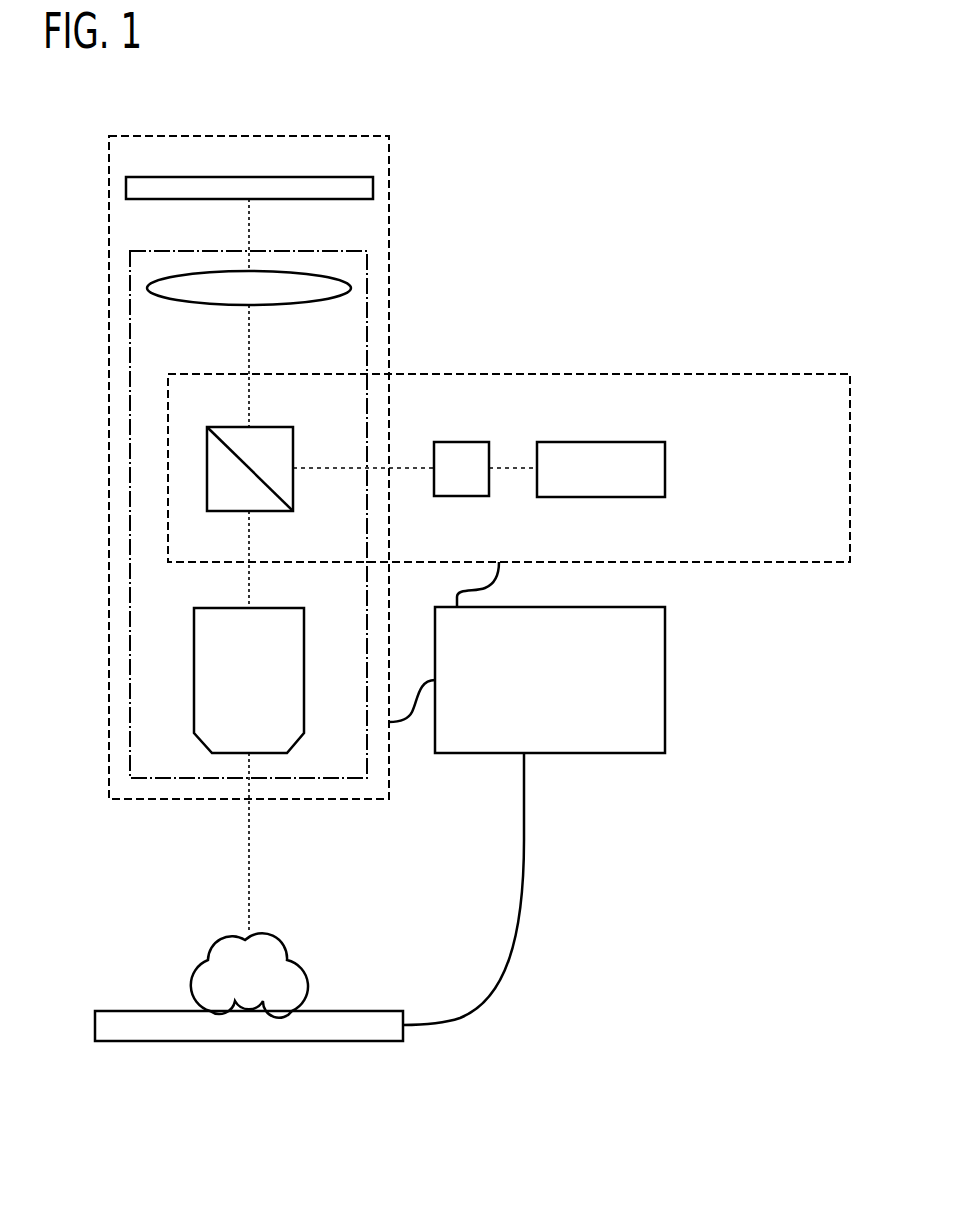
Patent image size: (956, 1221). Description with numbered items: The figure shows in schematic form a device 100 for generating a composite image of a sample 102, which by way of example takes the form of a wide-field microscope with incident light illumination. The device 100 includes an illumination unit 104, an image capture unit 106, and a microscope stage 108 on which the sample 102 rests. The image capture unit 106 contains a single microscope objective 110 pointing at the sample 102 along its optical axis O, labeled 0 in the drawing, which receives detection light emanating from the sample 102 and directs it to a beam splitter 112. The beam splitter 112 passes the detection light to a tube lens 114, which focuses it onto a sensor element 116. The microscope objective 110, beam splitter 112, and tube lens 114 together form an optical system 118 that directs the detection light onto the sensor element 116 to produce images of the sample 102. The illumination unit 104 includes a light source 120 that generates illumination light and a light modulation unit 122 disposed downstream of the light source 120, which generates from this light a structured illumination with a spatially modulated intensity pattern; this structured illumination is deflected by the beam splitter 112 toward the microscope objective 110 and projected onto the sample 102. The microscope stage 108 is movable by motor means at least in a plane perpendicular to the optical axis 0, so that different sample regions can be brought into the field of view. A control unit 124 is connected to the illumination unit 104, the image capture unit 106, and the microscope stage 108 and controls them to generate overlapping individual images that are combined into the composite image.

The device 100 is at (630, 108).
The sample 102 is at (271, 943).
The illumination unit 104 is at (736, 360).
The image capture unit 106 is at (410, 216).
The microscope stage 108 is at (250, 1028).
The microscope objective 110 is at (223, 681).
The beam splitter 112 is at (220, 483).
The tube lens 114 is at (158, 291).
The sensor element 116 is at (133, 190).
The optical system 118 is at (392, 303).
The light source 120 is at (665, 468).
The light modulation unit 122 is at (462, 452).
The control unit 124 is at (665, 680).
The optical axis 0 is at (249, 858).